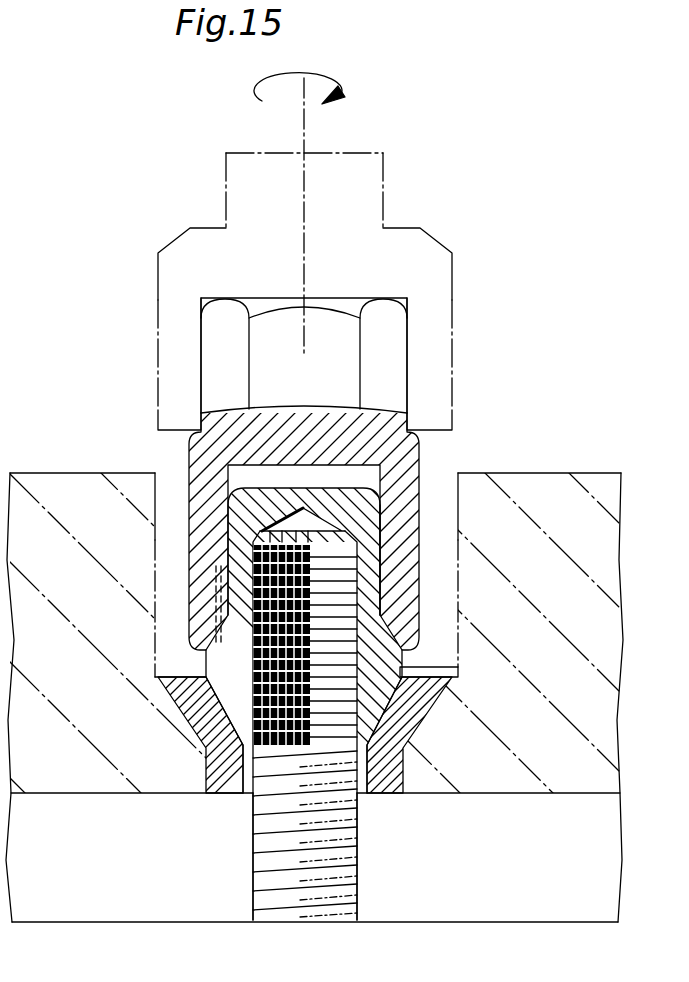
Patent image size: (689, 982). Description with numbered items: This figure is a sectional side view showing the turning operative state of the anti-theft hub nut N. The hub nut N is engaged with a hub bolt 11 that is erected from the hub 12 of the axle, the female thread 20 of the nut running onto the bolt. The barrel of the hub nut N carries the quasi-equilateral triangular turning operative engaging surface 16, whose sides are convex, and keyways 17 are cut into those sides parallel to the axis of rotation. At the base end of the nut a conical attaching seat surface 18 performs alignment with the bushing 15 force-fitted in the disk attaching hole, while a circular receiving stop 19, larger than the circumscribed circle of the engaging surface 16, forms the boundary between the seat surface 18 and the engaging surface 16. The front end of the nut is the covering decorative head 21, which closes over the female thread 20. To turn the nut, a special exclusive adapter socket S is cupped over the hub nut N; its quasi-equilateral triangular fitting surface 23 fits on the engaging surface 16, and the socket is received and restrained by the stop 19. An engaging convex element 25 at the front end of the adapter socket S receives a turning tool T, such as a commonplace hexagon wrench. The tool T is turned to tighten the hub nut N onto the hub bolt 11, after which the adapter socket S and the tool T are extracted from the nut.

The turning tool T is at (438, 225).
The hub nut N is at (306, 484).
The adapter socket S is at (427, 457).
The engaging convex element 25 is at (222, 352).
The covering decorative head 21 is at (253, 507).
The keyways 17 is at (224, 573).
The quasi-equilateral triangular fitting surface 23 is at (392, 546).
The turning operative engaging surface 16 is at (497, 600).
The receiving stop 19 is at (458, 667).
The attaching seat surface 18 is at (412, 737).
The bushing 15 is at (207, 734).
The female thread 20 is at (327, 727).
The hub bolt 11 is at (287, 900).
The hub 12 is at (477, 884).